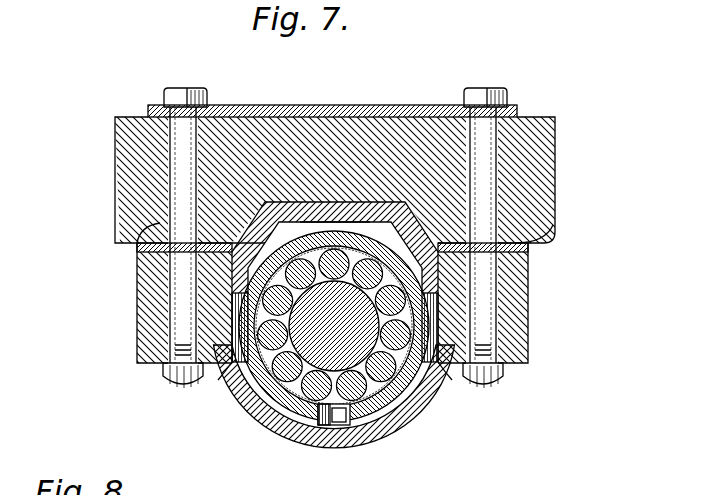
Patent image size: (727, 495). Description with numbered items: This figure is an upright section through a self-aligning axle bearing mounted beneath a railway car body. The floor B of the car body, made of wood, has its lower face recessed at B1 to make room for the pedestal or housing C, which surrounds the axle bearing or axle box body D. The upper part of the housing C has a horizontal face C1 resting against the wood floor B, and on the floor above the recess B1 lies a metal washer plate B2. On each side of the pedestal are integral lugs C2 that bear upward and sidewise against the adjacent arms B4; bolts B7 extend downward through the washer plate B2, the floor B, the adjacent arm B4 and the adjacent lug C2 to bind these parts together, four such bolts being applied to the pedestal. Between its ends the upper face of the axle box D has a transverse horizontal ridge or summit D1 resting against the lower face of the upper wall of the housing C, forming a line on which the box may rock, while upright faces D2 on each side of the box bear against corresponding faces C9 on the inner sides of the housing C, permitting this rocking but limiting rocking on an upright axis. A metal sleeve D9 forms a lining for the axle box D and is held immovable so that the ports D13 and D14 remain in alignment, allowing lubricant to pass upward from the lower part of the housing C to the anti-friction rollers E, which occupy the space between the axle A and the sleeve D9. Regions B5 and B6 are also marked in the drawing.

The axle A is at (250, 395).
The floor of the car body B is at (520, 190).
The recess B1 is at (272, 202).
The metal washer plate B2 is at (432, 107).
The arm B4 is at (137, 250).
The housing recess B5 is at (88, 217).
The housing flange B6 is at (140, 300).
The bolt B7 is at (182, 157).
The pedestal or housing C is at (290, 437).
The horizontal face C1 is at (312, 203).
The lug C2 is at (140, 347).
The inner side face of the housing C9 is at (232, 362).
The axle box D is at (415, 440).
The transverse horizontal ridge or summit D1 is at (340, 240).
The upright face D2 is at (235, 395).
The metal sleeve D9 is at (357, 217).
The port D13 is at (328, 427).
The port D14 is at (340, 417).
The anti-friction rollers E is at (275, 410).